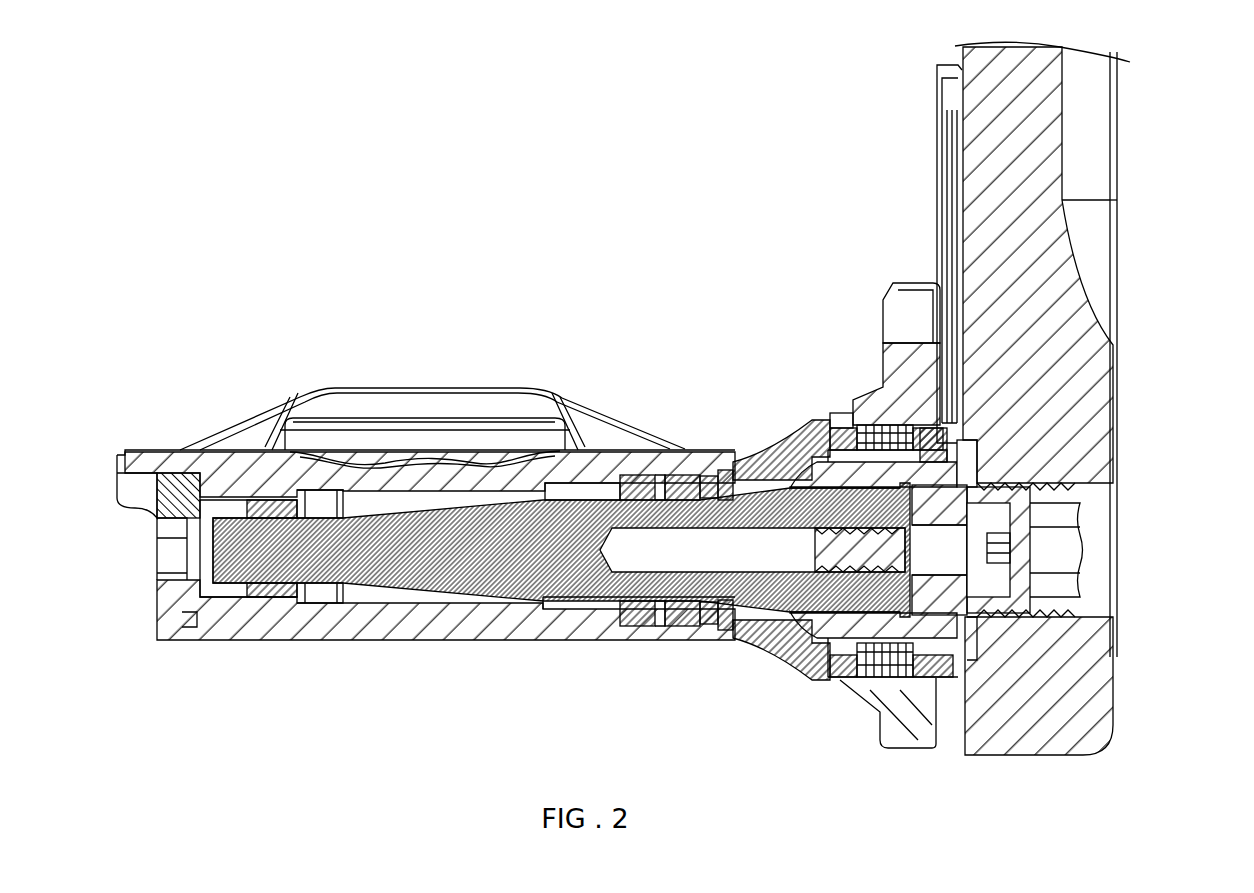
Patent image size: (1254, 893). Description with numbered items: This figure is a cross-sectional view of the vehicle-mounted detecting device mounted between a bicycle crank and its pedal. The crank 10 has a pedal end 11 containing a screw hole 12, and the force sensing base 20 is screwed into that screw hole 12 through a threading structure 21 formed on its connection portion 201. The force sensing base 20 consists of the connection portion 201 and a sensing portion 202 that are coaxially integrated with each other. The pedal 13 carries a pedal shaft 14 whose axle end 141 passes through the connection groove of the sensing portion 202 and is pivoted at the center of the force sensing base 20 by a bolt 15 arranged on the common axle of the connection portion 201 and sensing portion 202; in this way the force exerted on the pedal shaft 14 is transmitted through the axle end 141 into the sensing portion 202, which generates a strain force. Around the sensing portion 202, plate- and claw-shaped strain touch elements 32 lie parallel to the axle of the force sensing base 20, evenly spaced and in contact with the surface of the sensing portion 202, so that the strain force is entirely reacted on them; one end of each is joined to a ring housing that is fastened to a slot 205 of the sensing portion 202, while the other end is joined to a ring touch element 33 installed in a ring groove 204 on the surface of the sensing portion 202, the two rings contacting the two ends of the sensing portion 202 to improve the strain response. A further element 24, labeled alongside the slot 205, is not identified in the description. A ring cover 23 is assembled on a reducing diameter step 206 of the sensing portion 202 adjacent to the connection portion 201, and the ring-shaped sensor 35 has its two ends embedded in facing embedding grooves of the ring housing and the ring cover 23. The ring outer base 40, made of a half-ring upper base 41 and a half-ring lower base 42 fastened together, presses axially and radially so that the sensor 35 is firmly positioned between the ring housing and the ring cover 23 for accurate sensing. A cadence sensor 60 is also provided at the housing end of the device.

The crank 10 is at (1120, 168).
The pedal end 11 is at (1098, 348).
The screw hole 12 is at (1098, 550).
The pedal 13 is at (355, 386).
The pedal shaft 14 is at (467, 568).
The bolt 15 is at (1002, 575).
The force sensing base 20 is at (1050, 624).
The threading structure 21 is at (965, 474).
The ring cover 23 is at (800, 417).
The lower flange ring 24 is at (790, 658).
The strain touch element 32 is at (837, 413).
The ring touch element 33 is at (945, 668).
The sensor 35 is at (850, 411).
The ring outer base 40 is at (912, 266).
The half-ring upper base 41 is at (882, 385).
The half-ring lower base 42 is at (907, 744).
The cadence sensor 60 is at (735, 643).
The axle end 141 is at (840, 600).
The connection portion 201 is at (1085, 482).
The sensing portion 202 is at (760, 405).
The ring groove 204 is at (954, 731).
The slot 205 is at (759, 683).
The reducing diameter step 206 is at (978, 446).